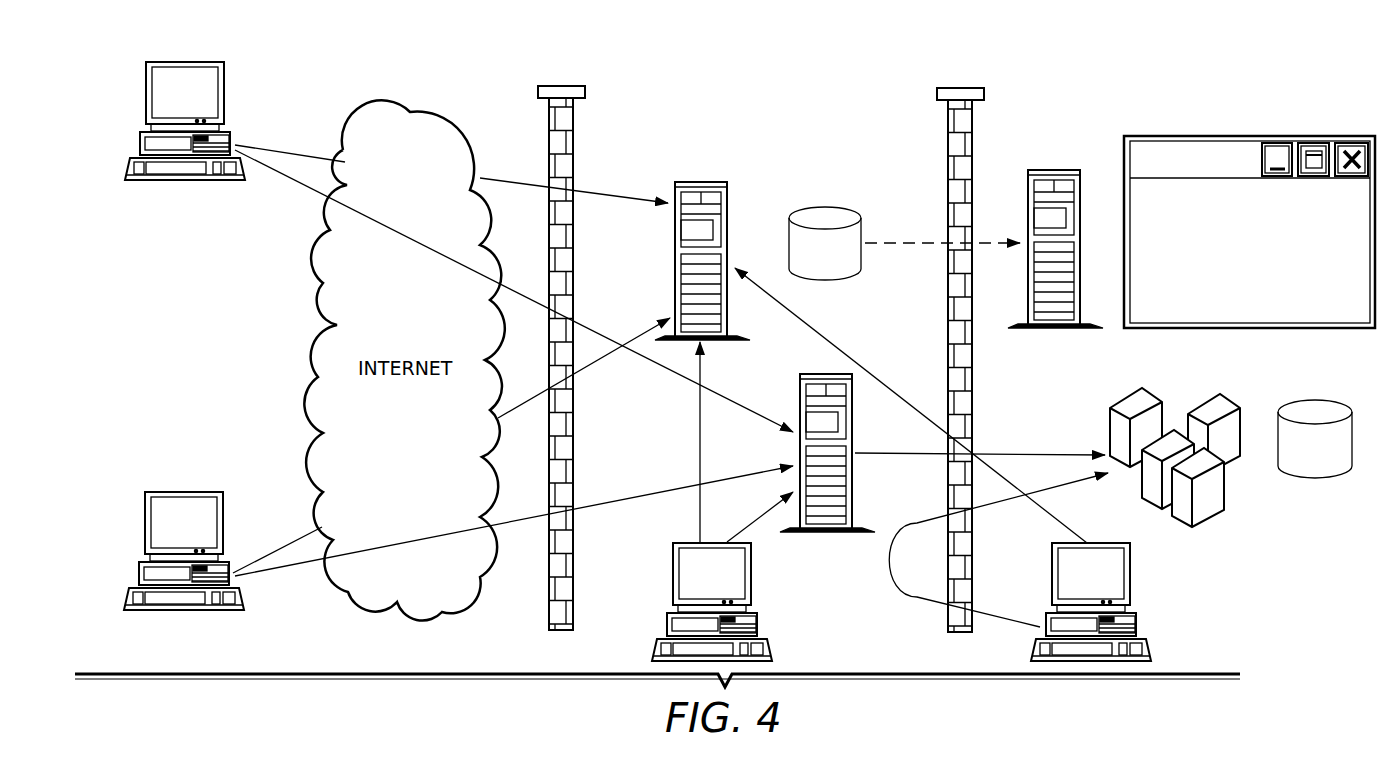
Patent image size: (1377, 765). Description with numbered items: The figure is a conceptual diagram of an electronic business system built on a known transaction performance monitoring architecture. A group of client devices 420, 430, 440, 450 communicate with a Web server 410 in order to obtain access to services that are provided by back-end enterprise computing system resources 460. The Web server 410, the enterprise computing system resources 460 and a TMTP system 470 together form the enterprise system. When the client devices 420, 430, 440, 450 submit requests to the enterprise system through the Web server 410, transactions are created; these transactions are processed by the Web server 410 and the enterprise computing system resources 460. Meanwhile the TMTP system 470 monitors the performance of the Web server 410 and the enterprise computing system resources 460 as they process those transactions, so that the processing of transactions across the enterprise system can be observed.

The Web server 410 is at (822, 532).
The client device 420 is at (146, 92).
The client device 430 is at (146, 526).
The client device 440 is at (673, 577).
The client device 450 is at (1130, 572).
The enterprise computing system resources 460 is at (1225, 487).
The TMTP system 470 is at (702, 182).